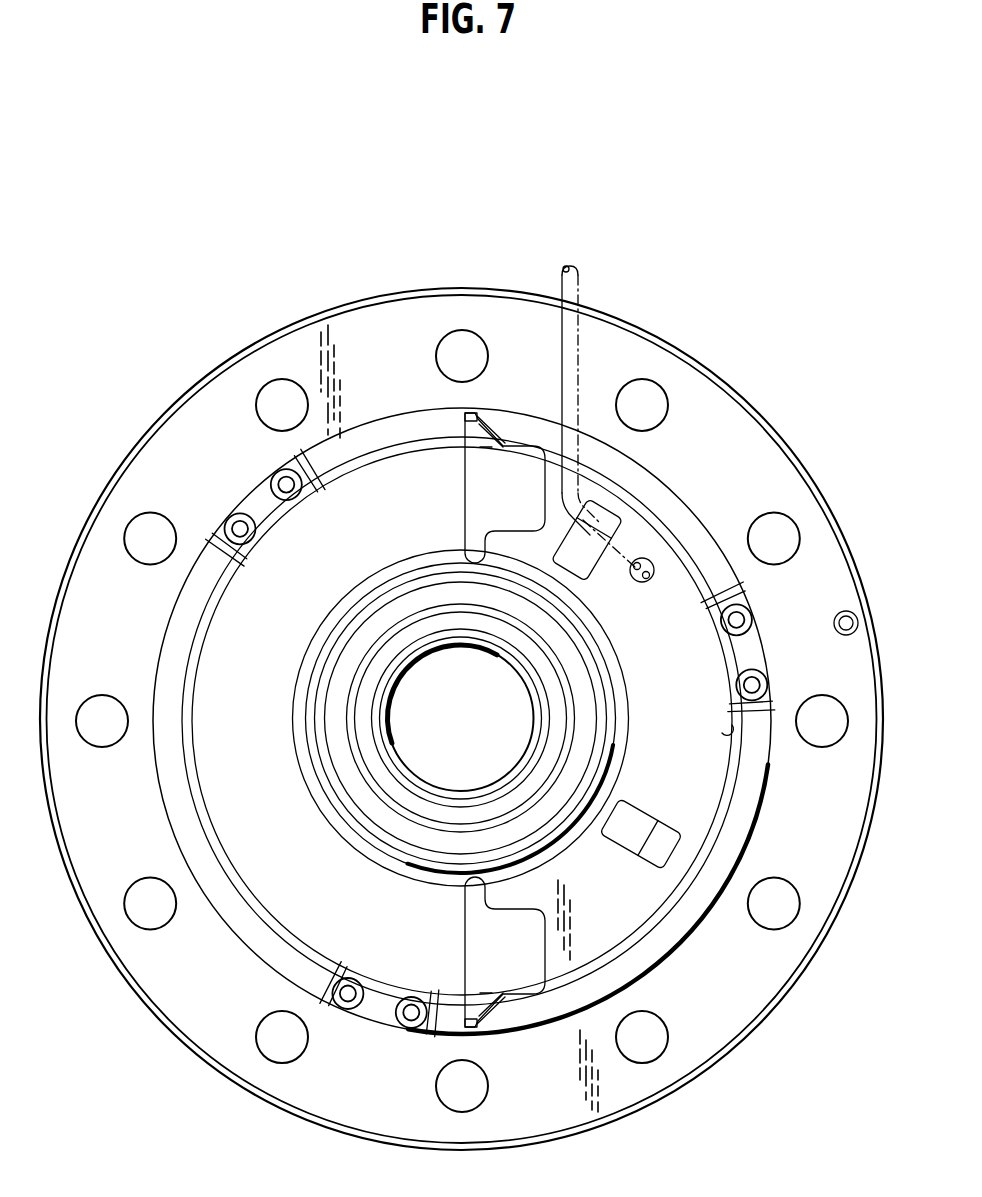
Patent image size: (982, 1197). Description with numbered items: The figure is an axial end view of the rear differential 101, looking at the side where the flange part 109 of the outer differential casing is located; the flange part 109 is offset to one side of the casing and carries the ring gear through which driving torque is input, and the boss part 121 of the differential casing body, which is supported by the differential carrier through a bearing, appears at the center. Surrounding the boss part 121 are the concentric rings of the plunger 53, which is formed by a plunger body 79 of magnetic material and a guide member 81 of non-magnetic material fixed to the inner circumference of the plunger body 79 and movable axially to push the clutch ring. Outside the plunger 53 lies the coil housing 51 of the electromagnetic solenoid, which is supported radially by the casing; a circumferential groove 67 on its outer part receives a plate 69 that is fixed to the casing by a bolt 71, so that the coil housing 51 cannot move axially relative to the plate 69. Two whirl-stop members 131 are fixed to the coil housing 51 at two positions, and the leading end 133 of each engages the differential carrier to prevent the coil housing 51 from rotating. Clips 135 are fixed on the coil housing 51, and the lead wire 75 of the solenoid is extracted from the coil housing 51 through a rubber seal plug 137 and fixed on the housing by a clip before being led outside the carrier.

The coil housing 51 is at (377, 517).
The plunger 53 is at (293, 834).
The circumferential groove 67 is at (203, 628).
The plate 69 is at (258, 497).
The bolt 71 is at (287, 500).
The lead wire 75 is at (575, 278).
The plunger body 79 is at (310, 788).
The guide member 81 is at (340, 805).
The rear differential 101 is at (743, 153).
The flange part 109 is at (399, 384).
The boss part 121 is at (548, 692).
The whirl-stop member 131 is at (481, 509).
The leading end 133 is at (485, 433).
The clip 135 is at (595, 556).
The rubber seal plug 137 is at (645, 560).